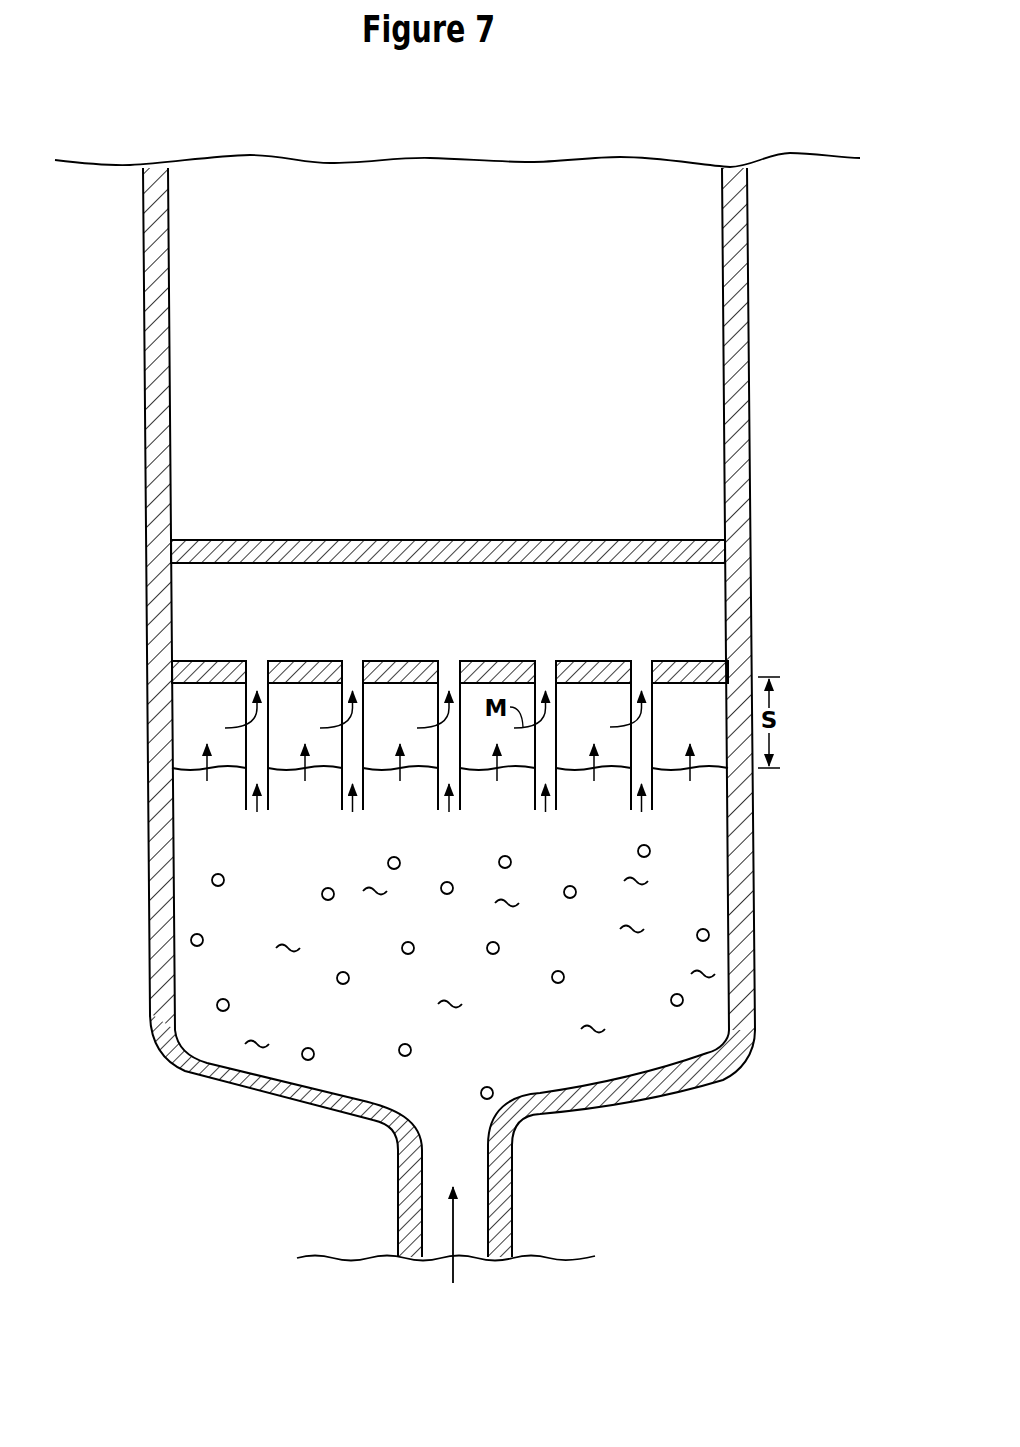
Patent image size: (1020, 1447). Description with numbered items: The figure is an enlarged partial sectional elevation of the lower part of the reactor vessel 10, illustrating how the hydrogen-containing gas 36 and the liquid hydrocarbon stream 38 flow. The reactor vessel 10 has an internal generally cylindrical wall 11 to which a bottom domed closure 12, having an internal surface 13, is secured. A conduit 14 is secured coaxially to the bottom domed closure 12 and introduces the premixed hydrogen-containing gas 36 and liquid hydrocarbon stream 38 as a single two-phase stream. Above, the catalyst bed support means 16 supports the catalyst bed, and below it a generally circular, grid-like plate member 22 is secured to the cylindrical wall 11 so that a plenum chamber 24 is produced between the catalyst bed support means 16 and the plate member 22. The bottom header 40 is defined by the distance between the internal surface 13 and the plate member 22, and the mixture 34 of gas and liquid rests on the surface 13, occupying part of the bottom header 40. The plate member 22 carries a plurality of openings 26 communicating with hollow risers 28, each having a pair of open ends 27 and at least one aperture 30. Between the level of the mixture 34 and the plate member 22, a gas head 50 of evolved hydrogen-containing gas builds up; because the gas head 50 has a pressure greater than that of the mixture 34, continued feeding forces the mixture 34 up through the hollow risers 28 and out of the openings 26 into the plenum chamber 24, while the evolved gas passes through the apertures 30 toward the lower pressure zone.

The reactor vessel 10 is at (757, 1000).
The internal generally cylindrical wall 11 is at (728, 348).
The bottom domed closure 12 is at (580, 1117).
The internal surface 13 is at (629, 1072).
The conduit 14 is at (503, 1195).
The catalyst bed support means 16 is at (680, 539).
The generally circular plate member 22 is at (709, 667).
The plenum chamber 24 is at (687, 597).
The openings 26 is at (259, 659).
The open ends 27 is at (352, 676).
The hollow risers 28 is at (654, 701).
The aperture 30 is at (641, 728).
The mixture 34 is at (703, 912).
The hydrogen-containing gas 36 is at (657, 851).
The liquid hydrocarbon stream 38 is at (657, 881).
The bottom header 40 is at (230, 1099).
The gas head 50 is at (201, 710).